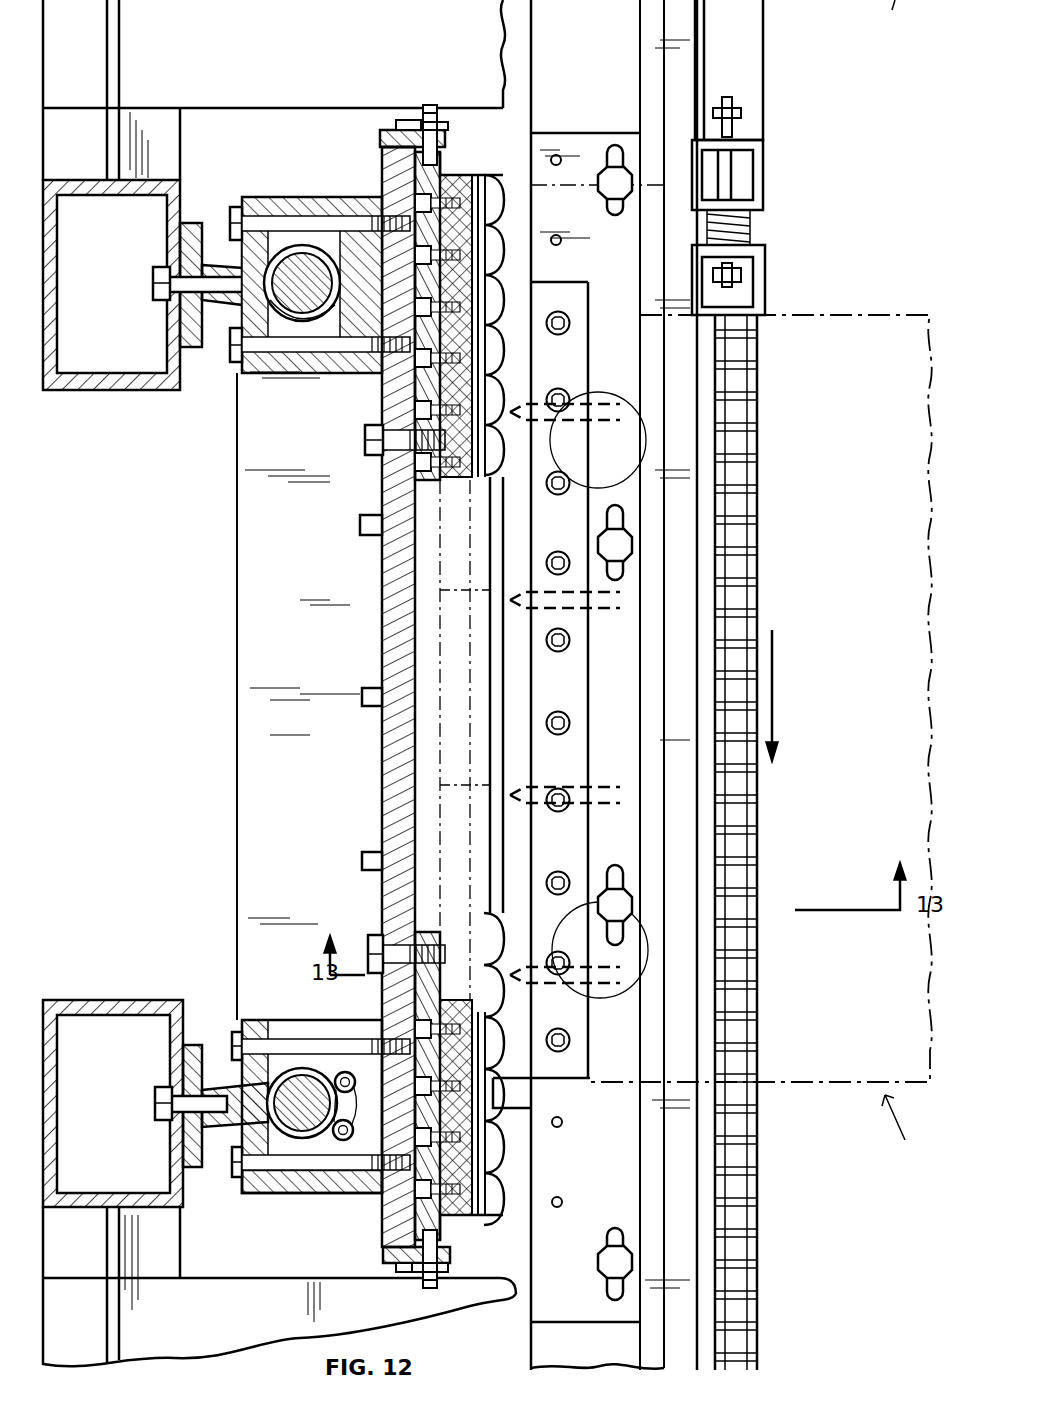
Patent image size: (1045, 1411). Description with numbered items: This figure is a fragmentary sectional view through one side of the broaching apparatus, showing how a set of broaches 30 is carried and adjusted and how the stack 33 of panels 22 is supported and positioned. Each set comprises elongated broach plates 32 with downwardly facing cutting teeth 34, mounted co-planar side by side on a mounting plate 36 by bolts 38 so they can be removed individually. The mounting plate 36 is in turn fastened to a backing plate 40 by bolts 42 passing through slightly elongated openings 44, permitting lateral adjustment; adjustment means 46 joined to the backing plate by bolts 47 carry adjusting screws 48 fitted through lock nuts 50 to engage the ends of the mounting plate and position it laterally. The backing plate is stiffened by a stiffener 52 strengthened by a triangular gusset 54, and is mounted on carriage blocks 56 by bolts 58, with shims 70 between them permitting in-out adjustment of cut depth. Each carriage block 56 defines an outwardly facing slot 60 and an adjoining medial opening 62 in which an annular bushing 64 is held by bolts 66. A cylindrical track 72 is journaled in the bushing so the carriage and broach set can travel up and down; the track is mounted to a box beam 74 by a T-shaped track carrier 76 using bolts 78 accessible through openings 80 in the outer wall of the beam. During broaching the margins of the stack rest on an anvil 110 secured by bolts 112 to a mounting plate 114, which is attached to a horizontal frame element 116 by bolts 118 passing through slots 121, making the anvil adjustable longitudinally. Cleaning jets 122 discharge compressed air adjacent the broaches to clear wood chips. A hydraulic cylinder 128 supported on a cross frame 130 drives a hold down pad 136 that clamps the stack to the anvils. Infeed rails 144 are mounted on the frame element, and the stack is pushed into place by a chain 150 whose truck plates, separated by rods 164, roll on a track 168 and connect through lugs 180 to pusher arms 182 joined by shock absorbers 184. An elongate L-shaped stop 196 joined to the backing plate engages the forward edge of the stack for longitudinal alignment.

The panels 22 is at (875, 315).
The broaches 30 is at (490, 165).
The broach plates 32 is at (462, 190).
The stack 33 is at (902, 1133).
The cutting teeth 34 is at (500, 205).
The mounting plates 36 is at (440, 170).
The bolts 38 is at (418, 175).
The backing plates 40 is at (392, 158).
The bolts 42 is at (365, 438).
The openings 44 is at (400, 432).
The adjustment means 46 is at (382, 135).
The bolts 47 is at (405, 120).
The adjusting screws 48 is at (430, 113).
The lock nuts 50 is at (440, 122).
The stiffeners 52 is at (258, 650).
The triangular gussets 54 is at (360, 524).
The carriage blocks 56 is at (272, 210).
The bolts 58 is at (232, 213).
The slots 60 is at (250, 310).
The medial openings 62 is at (310, 243).
The annular bushings 64 is at (252, 210).
The bolts 66 is at (350, 1075).
The shims 70 is at (392, 200).
The tracks 72 is at (303, 253).
The box beams 74 is at (127, 382).
The track carriers 76 is at (190, 235).
The bolts 78 is at (153, 280).
The openings 80 is at (50, 285).
The anvils 110 is at (575, 745).
The bolts 112 is at (568, 510).
The mounting plates 114 is at (548, 1242).
The horizontal frame elements 116 is at (545, 1353).
The bolts 118 is at (603, 178).
The slots 121 is at (615, 147).
The cleaning jets 122 is at (545, 408).
The hydraulic cylinders 128 is at (608, 392).
The cross frames 130 is at (225, 1320).
The hold down pad 136 is at (598, 1210).
The rails 144 is at (658, 1240).
The chains 150 is at (750, 443).
The rods 164 is at (900, 13).
The track 168 is at (685, 998).
The lugs 180 is at (750, 82).
The pusher arms 182 is at (758, 180).
The shock absorbers 184 is at (752, 227).
The L-shaped stops 196 is at (520, 1098).